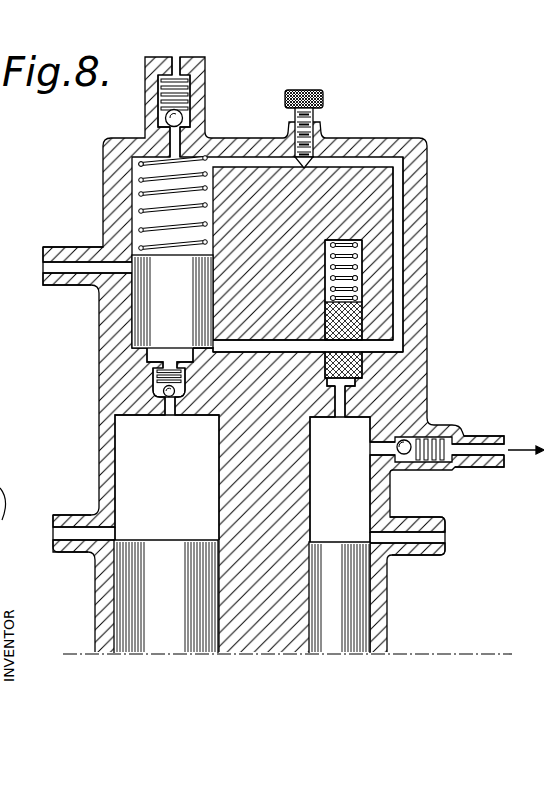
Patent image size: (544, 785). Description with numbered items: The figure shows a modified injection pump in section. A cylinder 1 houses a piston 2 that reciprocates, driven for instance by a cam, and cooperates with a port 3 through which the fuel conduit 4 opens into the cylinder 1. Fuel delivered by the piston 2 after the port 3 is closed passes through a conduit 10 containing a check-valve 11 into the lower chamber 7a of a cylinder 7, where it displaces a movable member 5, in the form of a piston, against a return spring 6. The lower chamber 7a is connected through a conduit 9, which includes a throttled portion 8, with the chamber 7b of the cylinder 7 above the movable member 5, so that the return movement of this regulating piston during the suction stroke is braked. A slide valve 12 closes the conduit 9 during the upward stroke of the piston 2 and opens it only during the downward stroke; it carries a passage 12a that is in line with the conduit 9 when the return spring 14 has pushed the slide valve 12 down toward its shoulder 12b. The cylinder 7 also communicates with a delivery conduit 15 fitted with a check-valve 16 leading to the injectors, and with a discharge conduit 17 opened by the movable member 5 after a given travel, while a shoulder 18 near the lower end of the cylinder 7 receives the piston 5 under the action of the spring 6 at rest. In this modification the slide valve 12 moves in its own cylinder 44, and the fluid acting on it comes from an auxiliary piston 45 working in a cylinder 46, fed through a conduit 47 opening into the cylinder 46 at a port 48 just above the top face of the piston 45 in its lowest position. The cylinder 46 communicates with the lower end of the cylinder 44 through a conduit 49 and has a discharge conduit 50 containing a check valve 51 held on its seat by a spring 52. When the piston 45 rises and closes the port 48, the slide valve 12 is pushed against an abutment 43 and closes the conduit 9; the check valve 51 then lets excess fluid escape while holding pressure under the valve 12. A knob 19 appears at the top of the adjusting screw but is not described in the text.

The cylinder 1 is at (118, 456).
The piston 2 is at (130, 580).
The port 3 is at (118, 528).
The fuel conduit 4 is at (82, 537).
The movable member 5 is at (160, 294).
The return spring 6 is at (143, 194).
The cylinder 7 is at (138, 310).
The lower chamber 7a is at (160, 352).
The chamber 7b is at (143, 175).
The throttled portion 8 is at (313, 160).
The conduit 9 is at (399, 222).
The conduit 10 is at (163, 412).
The check-valve 11 is at (160, 393).
The slide valve 12 is at (362, 313).
The passage 12a is at (349, 347).
The shoulder 12b is at (355, 383).
The return spring 14 is at (404, 293).
The delivery conduit 15 is at (168, 138).
The check-valve 16 is at (193, 113).
The discharge conduit 17 is at (72, 268).
The shoulder 18 is at (197, 352).
The knob 19 is at (296, 114).
The abutment 43 is at (344, 262).
The cylinder 44 is at (357, 281).
The auxiliary piston 45 is at (352, 608).
The cylinder 46 is at (370, 498).
The conduit 47 is at (418, 537).
The port 48 is at (370, 535).
The conduit 49 is at (340, 400).
The discharge conduit 50 is at (383, 447).
The check valve 51 is at (416, 458).
The spring 52 is at (449, 461).